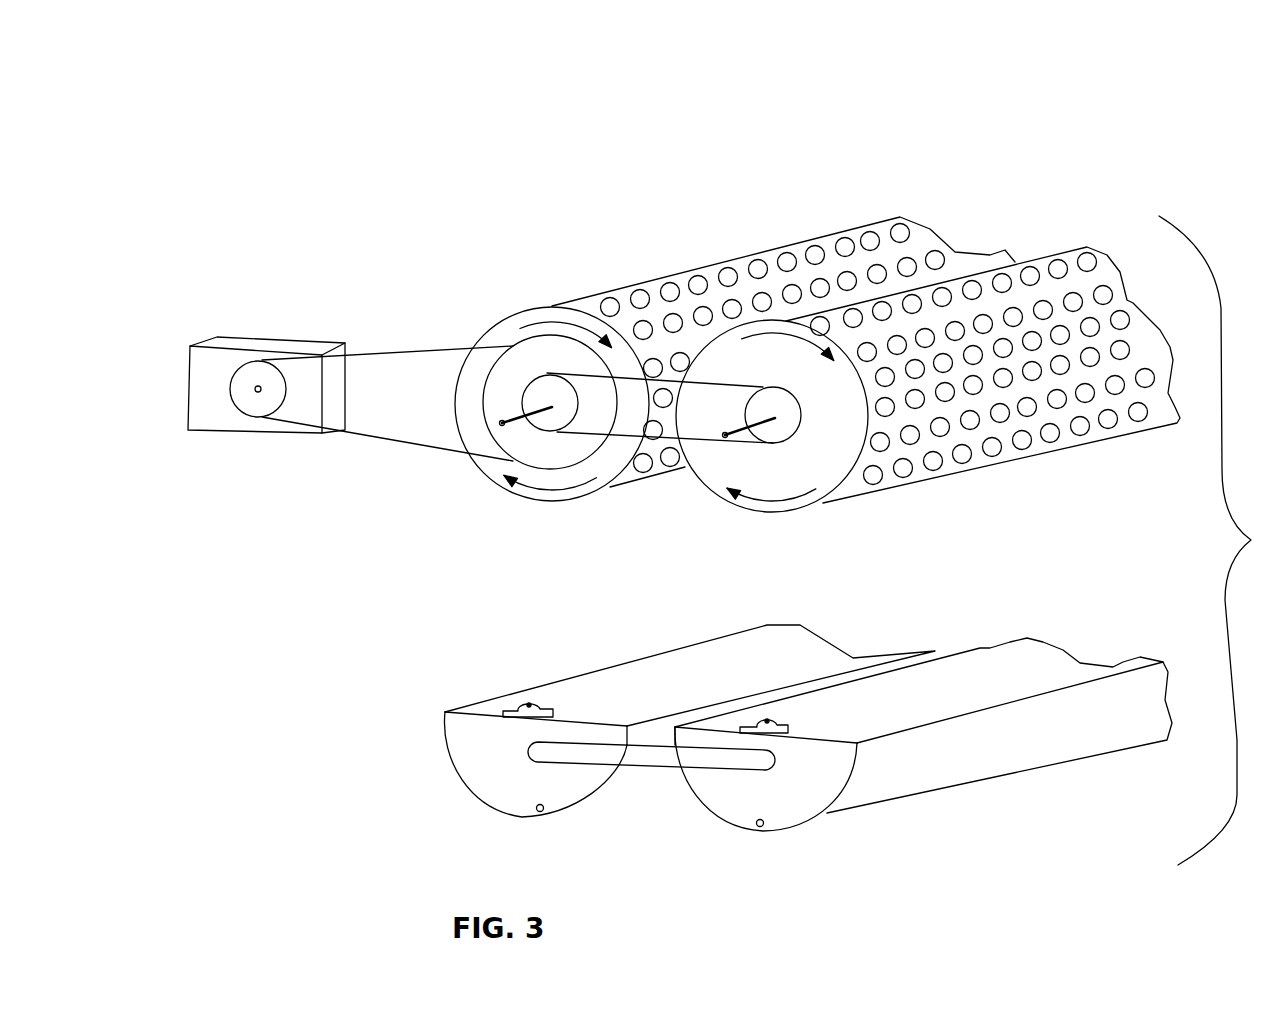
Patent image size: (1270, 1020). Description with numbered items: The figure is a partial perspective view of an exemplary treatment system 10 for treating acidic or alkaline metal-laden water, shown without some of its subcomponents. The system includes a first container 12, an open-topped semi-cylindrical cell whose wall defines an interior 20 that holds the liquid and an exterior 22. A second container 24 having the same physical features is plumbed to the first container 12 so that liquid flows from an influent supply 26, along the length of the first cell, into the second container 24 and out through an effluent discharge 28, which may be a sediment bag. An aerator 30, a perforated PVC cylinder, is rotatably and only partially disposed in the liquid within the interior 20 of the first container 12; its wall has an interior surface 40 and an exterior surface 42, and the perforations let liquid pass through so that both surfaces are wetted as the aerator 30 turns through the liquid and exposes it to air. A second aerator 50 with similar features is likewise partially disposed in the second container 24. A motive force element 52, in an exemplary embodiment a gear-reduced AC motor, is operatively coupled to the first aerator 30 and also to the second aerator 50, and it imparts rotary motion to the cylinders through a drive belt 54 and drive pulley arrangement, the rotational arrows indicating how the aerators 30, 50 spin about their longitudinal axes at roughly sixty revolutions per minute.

The treatment system 10 is at (429, 166).
The container 12 is at (457, 794).
The interior 20 is at (641, 688).
The exterior 22 is at (385, 677).
The second container 24 is at (812, 846).
The influent supply 26 is at (540, 812).
The effluent discharge 28 is at (760, 827).
The aerator 30 is at (506, 310).
The interior surface 40 is at (455, 400).
The exterior surface 42 is at (680, 248).
The second aerator 50 is at (822, 505).
The motive force element 52 is at (213, 338).
The drive belt 54 is at (402, 445).